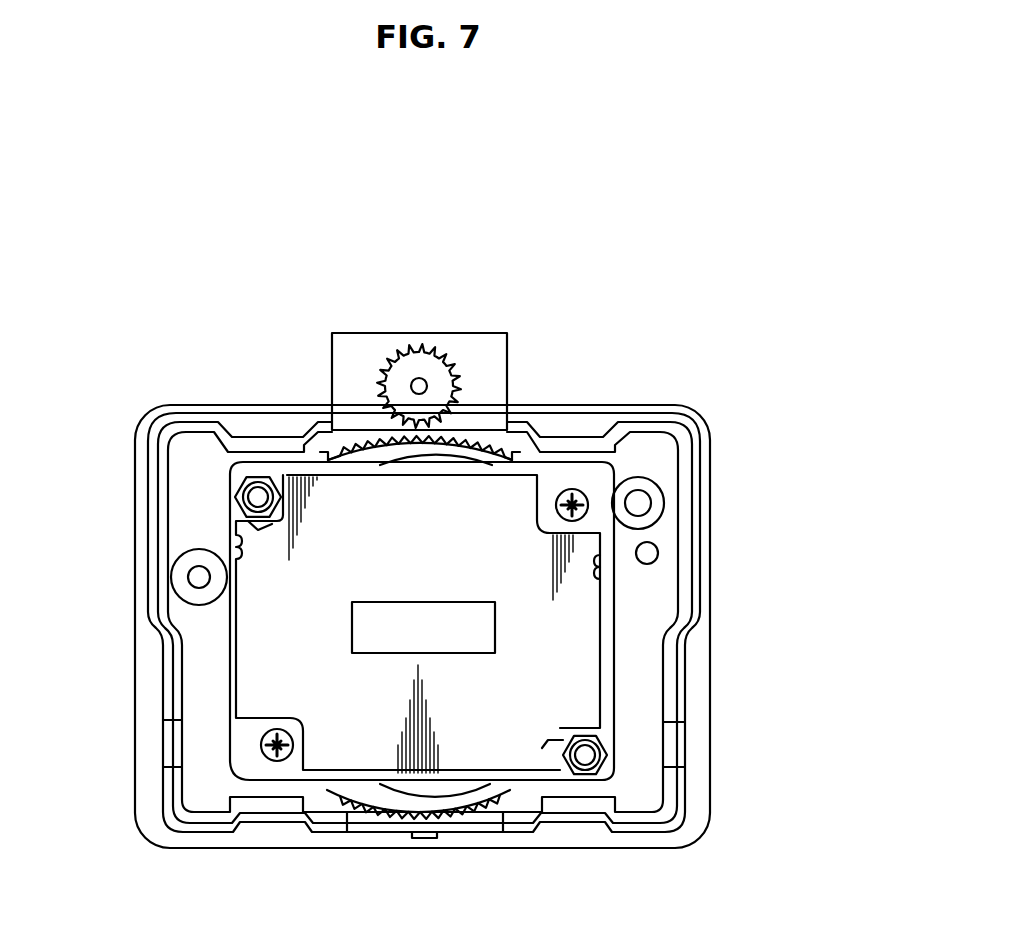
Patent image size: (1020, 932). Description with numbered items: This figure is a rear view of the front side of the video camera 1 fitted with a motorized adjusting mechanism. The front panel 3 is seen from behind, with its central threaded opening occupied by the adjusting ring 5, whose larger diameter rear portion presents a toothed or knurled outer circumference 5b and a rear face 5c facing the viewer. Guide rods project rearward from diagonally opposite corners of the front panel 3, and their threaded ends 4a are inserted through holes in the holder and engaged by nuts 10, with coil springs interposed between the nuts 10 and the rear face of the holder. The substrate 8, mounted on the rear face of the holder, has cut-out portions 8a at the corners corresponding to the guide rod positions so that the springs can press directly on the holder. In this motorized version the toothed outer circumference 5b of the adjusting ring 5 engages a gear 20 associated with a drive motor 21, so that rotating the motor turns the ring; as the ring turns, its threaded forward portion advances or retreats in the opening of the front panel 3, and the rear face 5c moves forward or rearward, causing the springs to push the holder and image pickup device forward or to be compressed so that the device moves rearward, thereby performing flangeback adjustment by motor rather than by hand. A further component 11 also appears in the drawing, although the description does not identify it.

The video camera 1 is at (415, 853).
The front panel 3 is at (205, 853).
The threaded ends 4a is at (258, 490).
The adjusting ring 5 is at (488, 447).
The toothed outer circumference 5b is at (527, 433).
The rear face 5c is at (388, 452).
The substrate 8 is at (525, 752).
The cut-out portions 8a is at (282, 513).
The nuts 10 is at (248, 492).
The screw 11 is at (578, 494).
The gear 20 is at (425, 347).
The drive motor 21 is at (460, 348).